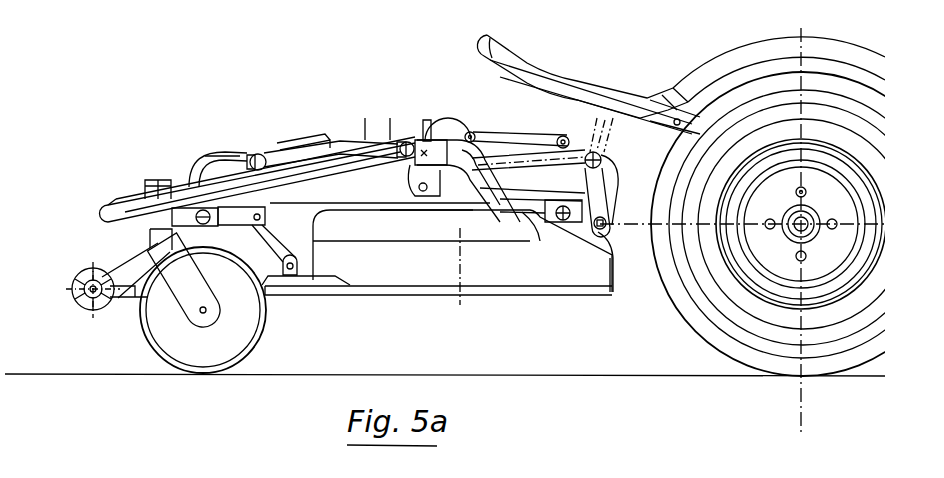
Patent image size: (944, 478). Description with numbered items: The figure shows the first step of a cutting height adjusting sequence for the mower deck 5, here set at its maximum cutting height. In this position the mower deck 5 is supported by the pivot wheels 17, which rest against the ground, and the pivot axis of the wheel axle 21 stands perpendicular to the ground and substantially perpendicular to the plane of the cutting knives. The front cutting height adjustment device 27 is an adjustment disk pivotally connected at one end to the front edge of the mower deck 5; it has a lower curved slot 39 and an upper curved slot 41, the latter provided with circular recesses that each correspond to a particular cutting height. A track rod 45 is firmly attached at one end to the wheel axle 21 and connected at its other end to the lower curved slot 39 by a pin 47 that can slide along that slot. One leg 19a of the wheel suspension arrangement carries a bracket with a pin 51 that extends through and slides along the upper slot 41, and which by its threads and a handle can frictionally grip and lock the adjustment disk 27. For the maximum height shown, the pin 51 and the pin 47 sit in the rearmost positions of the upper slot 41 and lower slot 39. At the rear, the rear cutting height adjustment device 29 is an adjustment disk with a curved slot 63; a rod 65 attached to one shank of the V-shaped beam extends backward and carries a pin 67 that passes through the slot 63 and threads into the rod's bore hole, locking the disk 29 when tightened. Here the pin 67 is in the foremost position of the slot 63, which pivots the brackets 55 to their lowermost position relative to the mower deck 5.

The mower deck 5 is at (333, 333).
The pivot wheels 17 is at (216, 357).
The leg of the wheel suspension arrangement 19a is at (303, 140).
The wheel axle 21 is at (152, 190).
The front cutting height adjustment device 27 is at (280, 300).
The rear cutting height adjustment device 29 is at (622, 135).
The lower curved slot 39 is at (193, 168).
The upper curved slot 41 is at (208, 152).
The track rod 45 is at (231, 220).
The pin 47 is at (262, 228).
The pin 51 is at (261, 156).
The brackets 55 is at (612, 245).
The curved slot 63 is at (573, 140).
The rod 65 is at (500, 147).
The pin 67 is at (542, 147).